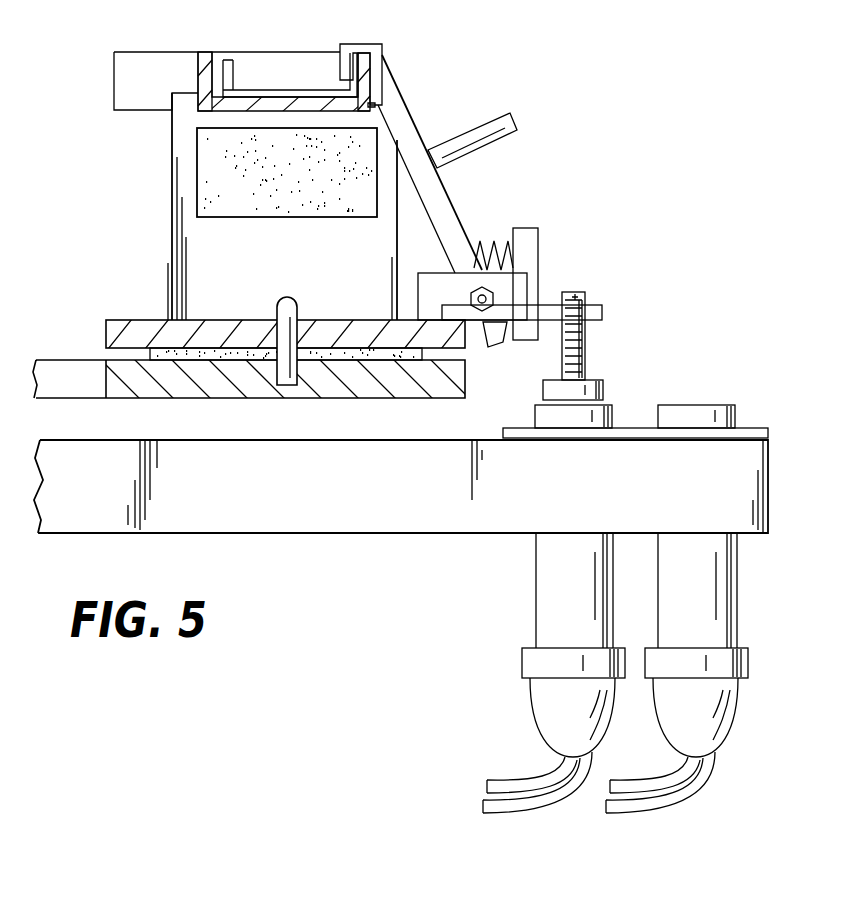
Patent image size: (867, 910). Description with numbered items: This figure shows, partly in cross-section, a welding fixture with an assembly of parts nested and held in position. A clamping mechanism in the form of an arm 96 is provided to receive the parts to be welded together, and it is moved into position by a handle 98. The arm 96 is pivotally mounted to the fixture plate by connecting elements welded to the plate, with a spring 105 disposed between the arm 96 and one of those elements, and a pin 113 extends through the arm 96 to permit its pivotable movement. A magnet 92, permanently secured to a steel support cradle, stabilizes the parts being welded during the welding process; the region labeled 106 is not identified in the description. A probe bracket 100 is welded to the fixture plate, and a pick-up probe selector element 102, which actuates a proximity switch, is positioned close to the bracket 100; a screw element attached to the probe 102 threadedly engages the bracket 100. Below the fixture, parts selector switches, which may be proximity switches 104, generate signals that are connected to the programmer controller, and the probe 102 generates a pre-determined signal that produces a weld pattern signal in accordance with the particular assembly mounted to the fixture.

The magnet 92 is at (210, 164).
The clamping mechanism arm 96 is at (442, 208).
The handle 98 is at (515, 120).
The probe bracket 100 is at (603, 312).
The pick-up probe selector element 102 is at (603, 391).
The proximity switches 104 is at (532, 590).
The spring 105 is at (490, 250).
The adhesive strip 106 is at (217, 350).
The pin 113 is at (481, 312).